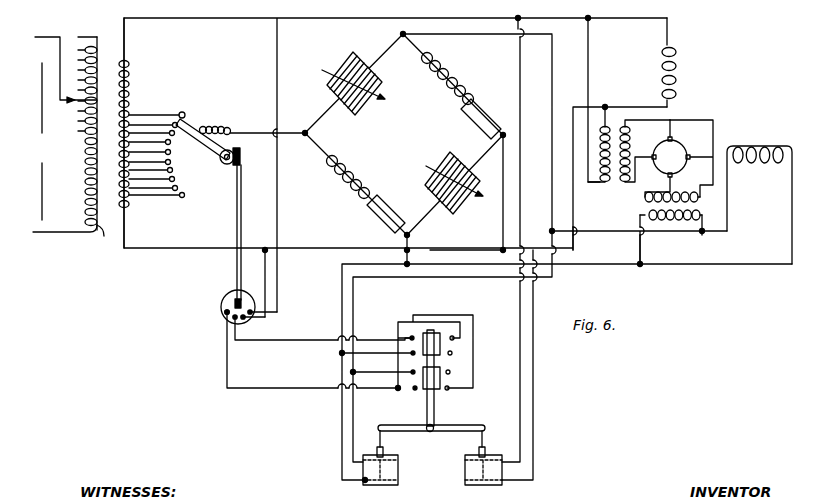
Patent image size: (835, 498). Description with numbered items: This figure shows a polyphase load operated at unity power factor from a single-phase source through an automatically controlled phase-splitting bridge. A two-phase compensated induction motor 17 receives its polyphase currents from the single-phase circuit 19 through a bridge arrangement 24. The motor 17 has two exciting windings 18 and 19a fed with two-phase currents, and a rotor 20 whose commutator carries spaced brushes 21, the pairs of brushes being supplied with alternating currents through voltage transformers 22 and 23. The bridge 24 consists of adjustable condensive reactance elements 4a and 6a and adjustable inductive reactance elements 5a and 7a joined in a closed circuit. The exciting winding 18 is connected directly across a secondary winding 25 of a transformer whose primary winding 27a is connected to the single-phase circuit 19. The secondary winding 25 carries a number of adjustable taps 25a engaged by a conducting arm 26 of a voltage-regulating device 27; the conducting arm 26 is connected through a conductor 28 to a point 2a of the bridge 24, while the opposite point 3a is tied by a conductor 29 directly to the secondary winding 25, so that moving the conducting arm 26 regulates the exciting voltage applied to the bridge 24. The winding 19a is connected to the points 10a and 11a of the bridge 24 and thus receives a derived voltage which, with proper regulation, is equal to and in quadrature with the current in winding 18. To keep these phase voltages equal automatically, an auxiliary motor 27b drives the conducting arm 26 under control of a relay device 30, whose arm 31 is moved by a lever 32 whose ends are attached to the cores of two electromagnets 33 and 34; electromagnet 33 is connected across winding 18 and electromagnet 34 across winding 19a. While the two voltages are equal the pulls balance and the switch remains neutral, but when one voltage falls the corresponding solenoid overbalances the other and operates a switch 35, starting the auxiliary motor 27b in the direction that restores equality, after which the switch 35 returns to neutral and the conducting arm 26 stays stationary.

The single-phase circuit 19 is at (65, 133).
The secondary winding 25 is at (129, 99).
The adjustable taps 25a is at (186, 116).
The conducting arm 26 is at (188, 137).
The conductor 28 is at (253, 125).
The primary winding 27a is at (101, 241).
The voltage-regulating device 27 is at (224, 298).
The auxiliary motor 27b is at (224, 310).
The bridge arrangement 24 is at (404, 134).
The bridge point 10a is at (389, 35).
The bridge point 2a is at (304, 133).
The bridge point 3a is at (504, 134).
The bridge point 11a is at (409, 236).
The adjustable condensive reactance element 4a is at (330, 74).
The adjustable condensive reactance element 6a is at (457, 183).
The adjustable inductive reactance element 5a is at (455, 82).
The adjustable inductive reactance element 7a is at (342, 191).
The conductor 29 is at (490, 251).
The exciting winding 18 is at (675, 80).
The voltage transformer 23 is at (609, 181).
The rotor 20 is at (671, 158).
The brushes 21 is at (654, 150).
The two-phase compensated induction motor 17 is at (684, 131).
The voltage transformer 22 is at (645, 213).
The exciting winding 19a is at (762, 147).
The switch 35 is at (437, 324).
The relay device 30 is at (454, 367).
The arm 31 is at (427, 420).
The lever 32 is at (456, 425).
The electromagnet 33 is at (470, 470).
The electromagnet 34 is at (393, 470).